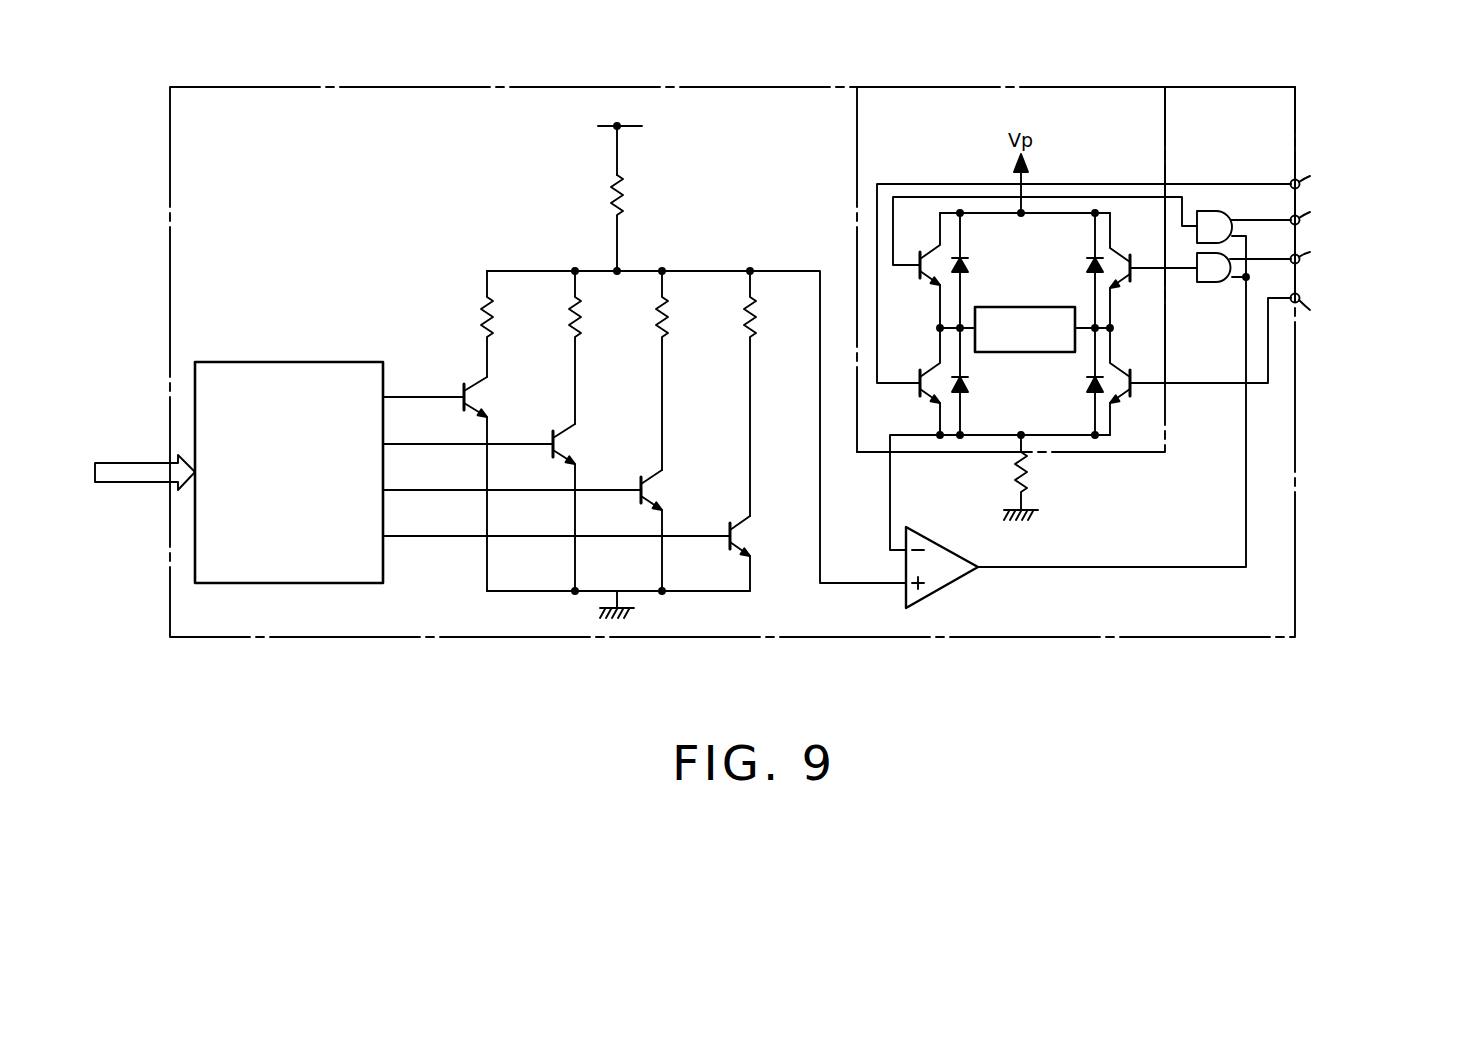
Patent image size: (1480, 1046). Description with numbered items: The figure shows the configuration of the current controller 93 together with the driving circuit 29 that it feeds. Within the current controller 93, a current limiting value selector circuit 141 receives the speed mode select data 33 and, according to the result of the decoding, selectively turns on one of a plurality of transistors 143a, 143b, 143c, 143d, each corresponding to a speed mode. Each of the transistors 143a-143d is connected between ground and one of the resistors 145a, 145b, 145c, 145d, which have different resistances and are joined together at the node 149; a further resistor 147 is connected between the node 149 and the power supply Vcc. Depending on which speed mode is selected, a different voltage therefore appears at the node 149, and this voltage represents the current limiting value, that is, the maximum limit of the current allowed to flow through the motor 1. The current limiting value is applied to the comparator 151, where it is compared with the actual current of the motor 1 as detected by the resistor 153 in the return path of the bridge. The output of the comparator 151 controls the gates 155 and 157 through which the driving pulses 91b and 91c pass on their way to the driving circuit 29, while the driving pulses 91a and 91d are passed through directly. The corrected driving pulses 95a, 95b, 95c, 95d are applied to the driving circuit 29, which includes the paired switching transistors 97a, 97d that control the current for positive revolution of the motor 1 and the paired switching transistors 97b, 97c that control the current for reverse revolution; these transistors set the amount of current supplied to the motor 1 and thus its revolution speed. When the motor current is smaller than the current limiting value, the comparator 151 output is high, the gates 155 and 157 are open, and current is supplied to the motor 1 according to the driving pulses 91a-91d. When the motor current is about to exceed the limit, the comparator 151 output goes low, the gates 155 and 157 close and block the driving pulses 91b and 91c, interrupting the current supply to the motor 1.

The current controller 93 is at (517, 86).
The driving circuit 29 is at (1003, 86).
The speed mode select data 33 is at (120, 467).
The current limiting value selector circuit 141 is at (313, 362).
The transistor 143a is at (464, 387).
The transistor 143b is at (556, 432).
The transistor 143c is at (645, 477).
The transistor 143d is at (733, 523).
The resistor 145a is at (482, 300).
The resistor 145b is at (567, 322).
The resistor 145c is at (653, 322).
The resistor 145d is at (742, 322).
The resistor 147 is at (630, 197).
The node 149 is at (620, 271).
The comparator 151 is at (942, 550).
The resistor 153 is at (1033, 473).
The gate 155 is at (1222, 211).
The gate 157 is at (1217, 282).
The switching transistor 97a is at (919, 268).
The switching transistor 97b is at (918, 375).
The switching transistor 97c is at (1129, 257).
The switching transistor 97d is at (1125, 398).
The corrected driving pulse 95a is at (1185, 182).
The corrected driving pulse 95b is at (1185, 208).
The corrected driving pulse 95c is at (1182, 270).
The corrected driving pulse 95d is at (1196, 385).
The driving pulse 91a is at (1379, 173).
The driving pulse 91b is at (1380, 221).
The driving pulse 91c is at (1379, 265).
The driving pulse 91d is at (1380, 313).
The carriage motor 1 is at (1008, 307).